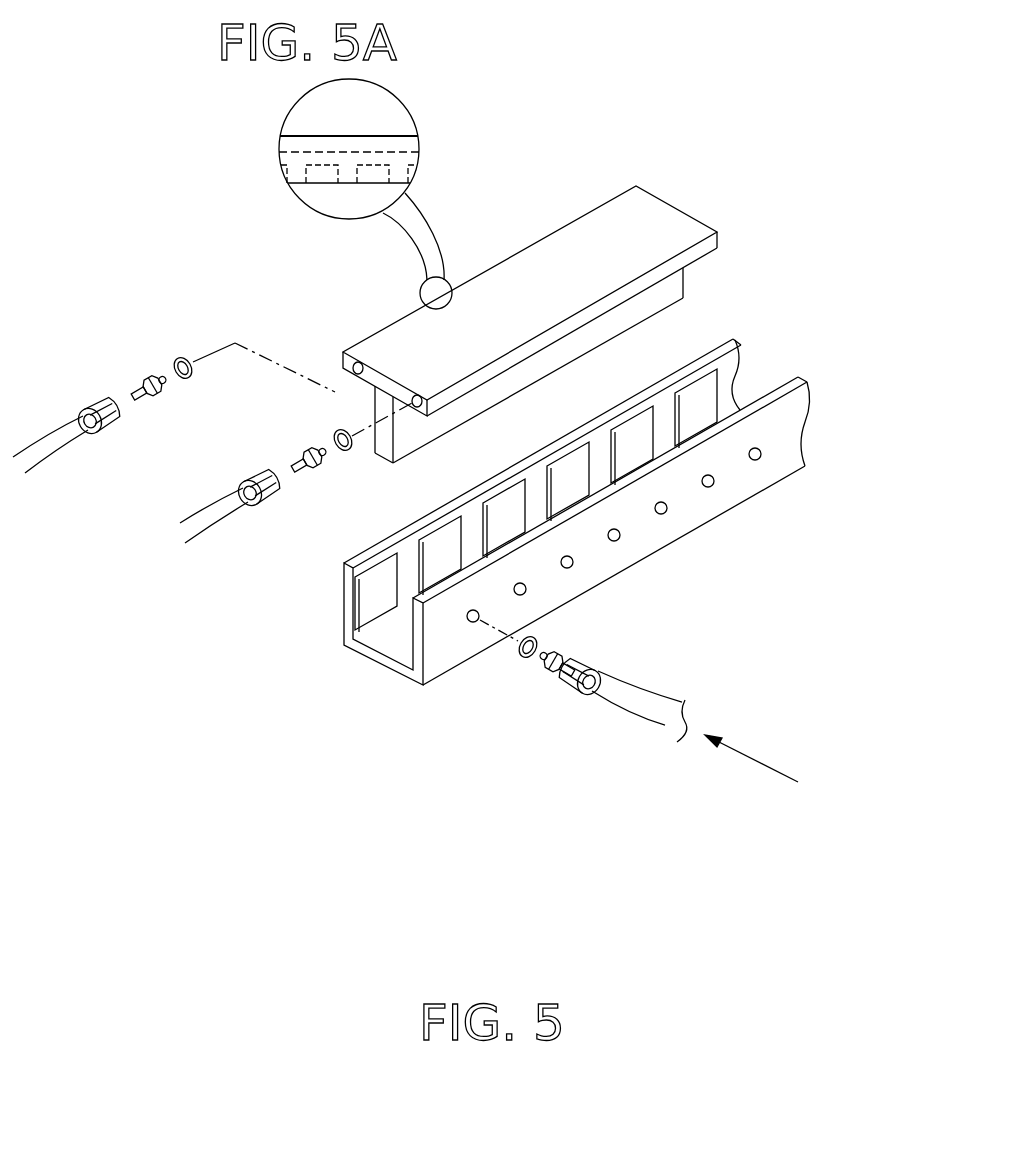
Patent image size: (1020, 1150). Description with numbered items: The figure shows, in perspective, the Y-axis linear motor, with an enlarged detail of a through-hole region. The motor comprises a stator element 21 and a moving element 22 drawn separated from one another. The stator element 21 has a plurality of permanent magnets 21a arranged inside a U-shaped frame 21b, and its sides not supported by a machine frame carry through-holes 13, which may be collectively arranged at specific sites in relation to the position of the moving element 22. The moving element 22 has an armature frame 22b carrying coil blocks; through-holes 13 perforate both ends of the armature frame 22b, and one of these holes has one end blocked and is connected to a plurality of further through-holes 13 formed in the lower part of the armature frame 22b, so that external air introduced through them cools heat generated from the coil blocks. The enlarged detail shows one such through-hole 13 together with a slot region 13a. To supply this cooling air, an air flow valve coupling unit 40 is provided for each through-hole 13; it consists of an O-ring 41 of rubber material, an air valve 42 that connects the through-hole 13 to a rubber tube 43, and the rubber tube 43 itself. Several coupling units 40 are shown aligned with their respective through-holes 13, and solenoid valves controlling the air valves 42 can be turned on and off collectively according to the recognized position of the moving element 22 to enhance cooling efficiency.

In FIG. 5A, the through-holes 13 is at (402, 160).
In FIG. 5, the through-holes 13 is at (358, 364).
In FIG. 5A, the slot 13a is at (298, 176).
In FIG. 5, the stator element 21 is at (350, 655).
In FIG. 5, the permanent magnets 21a is at (367, 598).
In FIG. 5, the U-shaped frame 21b is at (399, 688).
In FIG. 5, the moving element 22 is at (565, 216).
In FIG. 5, the armature frame 22b is at (718, 249).
In FIG. 5, the air flow valve coupling unit 40 is at (350, 531).
In FIG. 5, the O-ring 41 is at (184, 379).
In FIG. 5, the air valve 42 is at (154, 397).
In FIG. 5, the rubber tube 43 is at (110, 433).